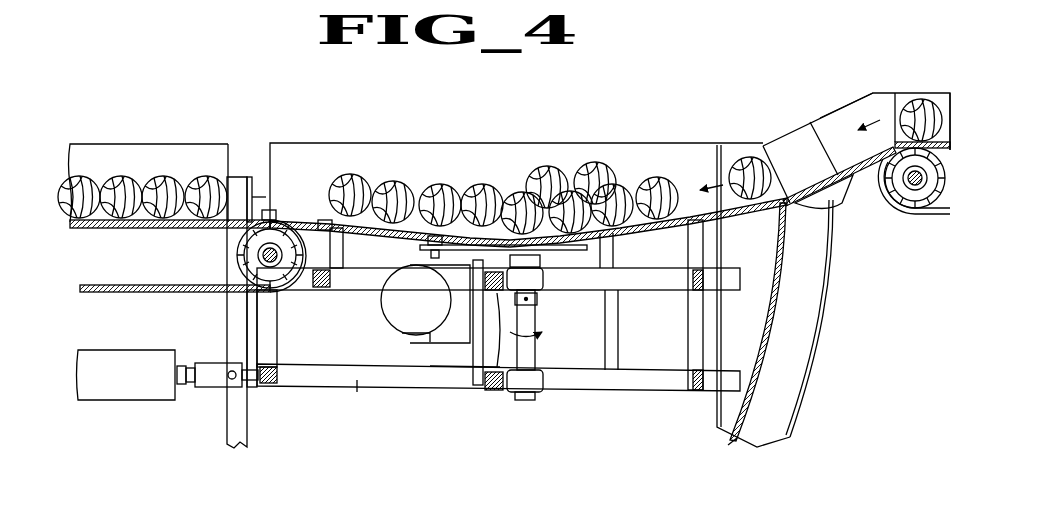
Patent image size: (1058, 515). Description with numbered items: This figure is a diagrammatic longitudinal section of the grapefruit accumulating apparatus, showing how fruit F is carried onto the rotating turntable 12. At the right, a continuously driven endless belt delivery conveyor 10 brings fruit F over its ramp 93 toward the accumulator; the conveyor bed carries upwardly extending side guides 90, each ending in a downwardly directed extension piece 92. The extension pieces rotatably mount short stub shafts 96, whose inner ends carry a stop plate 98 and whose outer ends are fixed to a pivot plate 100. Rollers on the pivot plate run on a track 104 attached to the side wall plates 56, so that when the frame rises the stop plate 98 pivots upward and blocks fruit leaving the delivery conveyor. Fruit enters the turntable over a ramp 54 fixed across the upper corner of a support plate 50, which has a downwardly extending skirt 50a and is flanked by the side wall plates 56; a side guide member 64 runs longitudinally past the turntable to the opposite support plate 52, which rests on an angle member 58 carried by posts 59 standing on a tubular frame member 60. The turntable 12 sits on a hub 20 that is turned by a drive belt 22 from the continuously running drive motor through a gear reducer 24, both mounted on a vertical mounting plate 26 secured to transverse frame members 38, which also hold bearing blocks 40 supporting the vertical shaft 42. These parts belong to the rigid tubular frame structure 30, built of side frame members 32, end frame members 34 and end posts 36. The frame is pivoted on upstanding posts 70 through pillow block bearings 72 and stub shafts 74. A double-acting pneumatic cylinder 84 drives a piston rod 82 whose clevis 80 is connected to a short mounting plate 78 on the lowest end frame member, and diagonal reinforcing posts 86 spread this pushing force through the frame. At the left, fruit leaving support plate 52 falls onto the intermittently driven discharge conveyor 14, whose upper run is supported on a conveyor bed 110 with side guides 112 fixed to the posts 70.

The delivery conveyor 10 is at (941, 222).
The turntable 12 is at (634, 229).
The discharge conveyor 14 is at (240, 230).
The hub 20 is at (586, 251).
The drive belt 22 is at (428, 244).
The gear reducer 24 is at (452, 333).
The mounting plate 26 is at (480, 375).
The tubular frame structure 30 is at (618, 395).
The side frame members 32 is at (650, 272).
The end frame members 34 is at (278, 368).
The end posts 36 is at (277, 314).
The transverse frame members 38 is at (491, 322).
The bearing blocks 40 is at (545, 279).
The shaft 42 is at (536, 316).
The support plate 50 is at (727, 218).
The skirt portion 50a is at (742, 442).
The support plate 52 is at (283, 219).
The ramp 54 is at (774, 188).
The side wall plates 56 is at (812, 243).
The angle member 58 is at (333, 232).
The posts 59 is at (343, 255).
The tubular frame member 60 is at (331, 279).
The side guide member 64 is at (603, 146).
The upstanding posts 70 is at (227, 311).
The pillow block bearing 72 is at (262, 197).
The stub shaft 74 is at (269, 211).
The mounting plate 78 is at (255, 388).
The clevis 80 is at (216, 387).
The piston rod 82 is at (192, 366).
The pneumatic cylinder 84 is at (126, 375).
The reinforcing posts 86 is at (498, 390).
The side guides 90 is at (903, 95).
The extension piece 92 is at (870, 97).
The ramp 93 is at (885, 170).
The stub shaft 96 is at (842, 172).
The stop plate 98 is at (816, 201).
The pivot plate 100 is at (805, 129).
The tracks 104 is at (826, 323).
The conveyor bed 110 is at (136, 229).
The side guides 112 is at (208, 144).
The fruit F is at (162, 176).